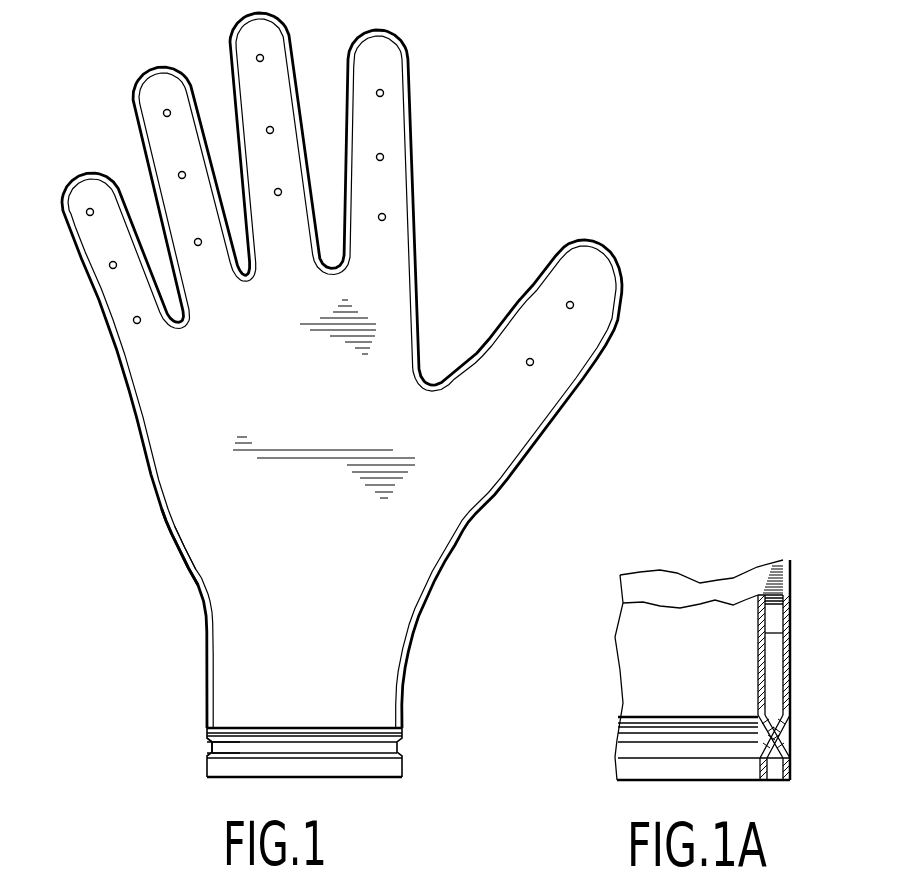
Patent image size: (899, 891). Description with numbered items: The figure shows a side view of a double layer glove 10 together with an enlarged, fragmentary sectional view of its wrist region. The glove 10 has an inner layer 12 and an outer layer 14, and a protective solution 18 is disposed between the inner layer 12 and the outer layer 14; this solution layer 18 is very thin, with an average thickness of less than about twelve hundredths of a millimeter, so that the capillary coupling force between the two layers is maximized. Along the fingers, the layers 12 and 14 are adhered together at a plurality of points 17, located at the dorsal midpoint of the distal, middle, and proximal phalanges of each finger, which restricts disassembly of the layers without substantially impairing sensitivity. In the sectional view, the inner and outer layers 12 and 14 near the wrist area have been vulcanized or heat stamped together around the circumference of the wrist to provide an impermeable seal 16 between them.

In FIG. 1, the double layer glove 10 is at (473, 190).
In FIG. 1, the inner layer 12 is at (186, 547).
In FIG. 1A, the inner layer 12 is at (788, 634).
In FIG. 1, the outer layer 14 is at (189, 568).
In FIG. 1A, the outer layer 14 is at (788, 692).
In FIG. 1, the impermeable seal 16 is at (195, 742).
In FIG. 1A, the impermeable seal 16 is at (797, 733).
In FIG. 1, the adhered points 17 is at (341, 204).
In FIG. 1, the protective solution 18 is at (165, 519).
In FIG. 1A, the protective solution 18 is at (786, 600).